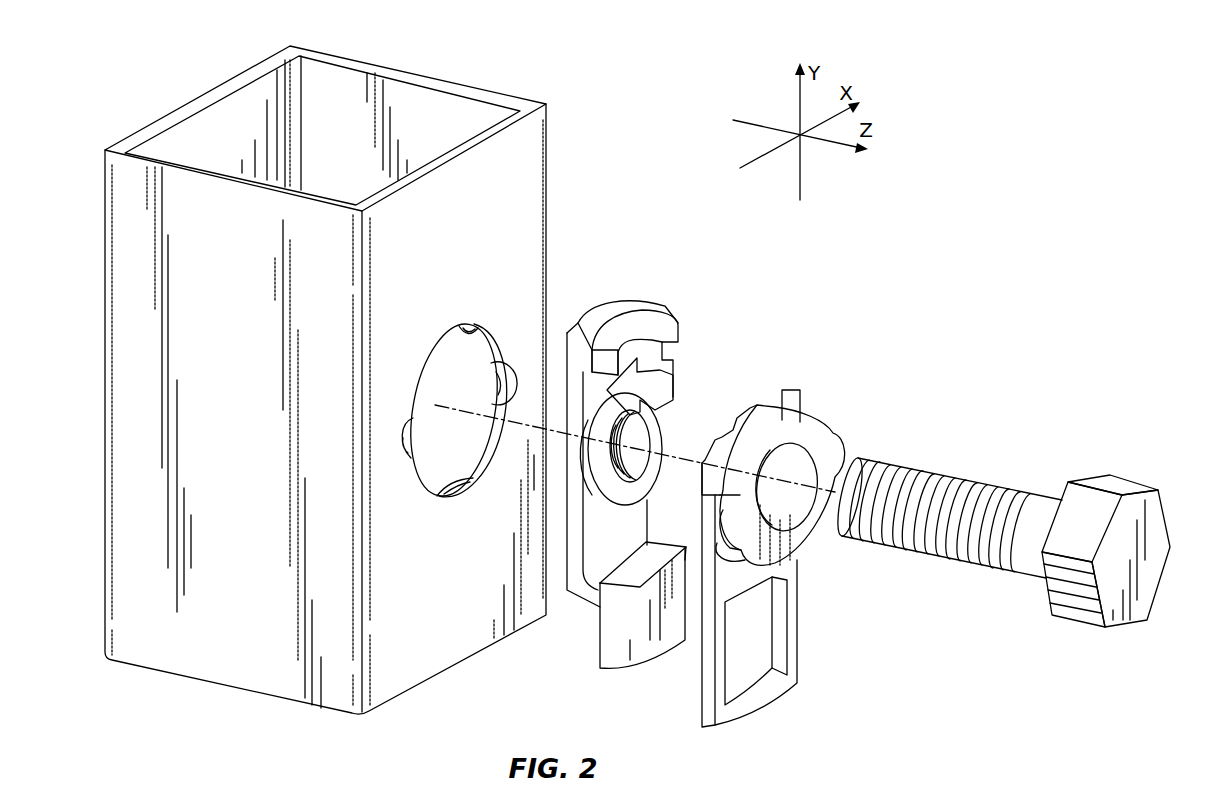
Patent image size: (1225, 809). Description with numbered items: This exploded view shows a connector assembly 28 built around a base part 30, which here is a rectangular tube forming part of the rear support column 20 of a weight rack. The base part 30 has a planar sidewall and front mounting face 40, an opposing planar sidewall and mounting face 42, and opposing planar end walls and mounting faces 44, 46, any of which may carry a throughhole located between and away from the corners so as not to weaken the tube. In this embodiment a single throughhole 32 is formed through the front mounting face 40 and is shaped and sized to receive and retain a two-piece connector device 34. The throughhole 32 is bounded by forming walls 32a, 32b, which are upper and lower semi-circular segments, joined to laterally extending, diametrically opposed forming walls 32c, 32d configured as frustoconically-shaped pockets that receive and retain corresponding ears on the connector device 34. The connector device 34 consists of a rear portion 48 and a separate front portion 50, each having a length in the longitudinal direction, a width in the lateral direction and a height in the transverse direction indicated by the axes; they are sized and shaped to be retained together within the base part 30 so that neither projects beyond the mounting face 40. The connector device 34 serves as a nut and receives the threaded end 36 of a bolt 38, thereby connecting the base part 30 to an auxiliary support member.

The rear support column 20 is at (400, 61).
The connector assembly 28 is at (1016, 282).
The base part 30 is at (328, 375).
The throughhole 32 is at (419, 396).
The forming wall 32a is at (479, 323).
The forming wall 32b is at (446, 496).
The forming wall 32c is at (401, 440).
The forming wall 32d is at (495, 345).
The two-piece connector device 34 is at (598, 302).
The threaded end 36 is at (972, 485).
The bolt 38 is at (1155, 558).
The front mounting face 40 is at (520, 190).
The mounting face 42 is at (205, 127).
The mounting face 44 is at (442, 108).
The mounting face 46 is at (125, 234).
The rear portion 48 is at (574, 623).
The front portion 50 is at (783, 711).